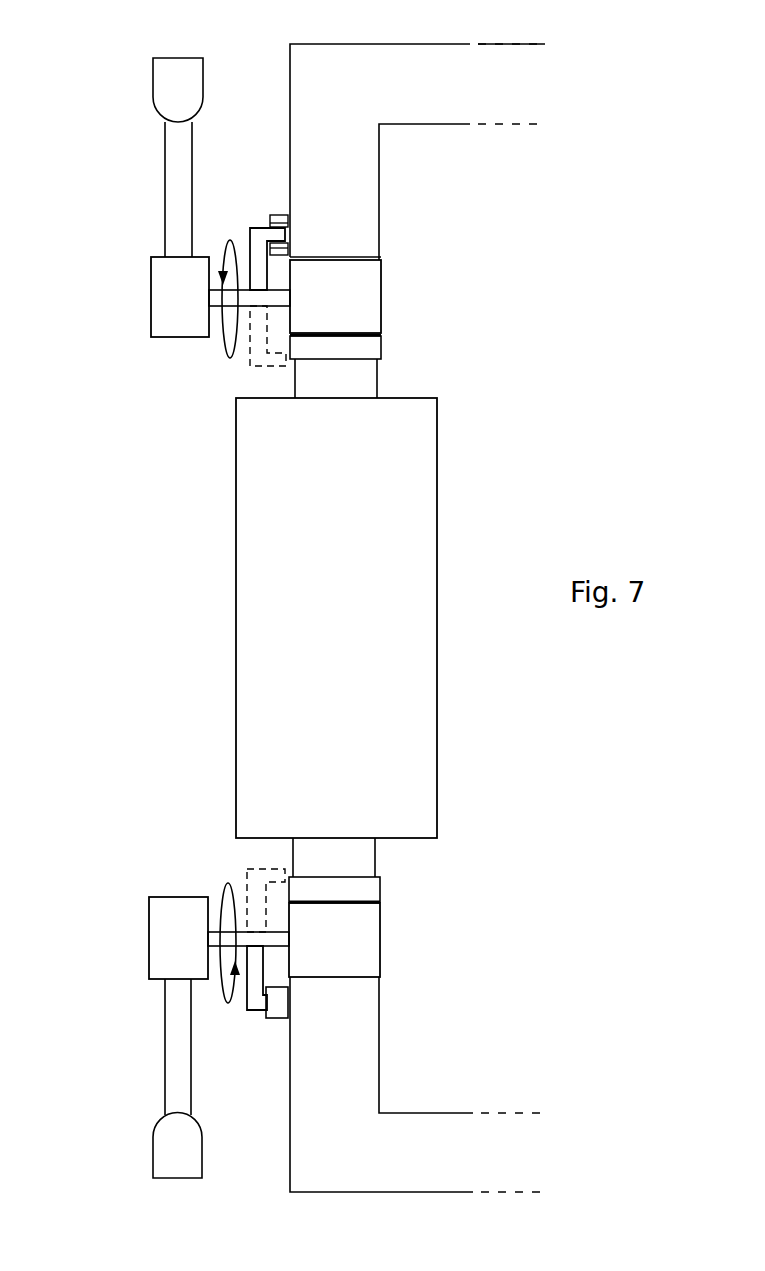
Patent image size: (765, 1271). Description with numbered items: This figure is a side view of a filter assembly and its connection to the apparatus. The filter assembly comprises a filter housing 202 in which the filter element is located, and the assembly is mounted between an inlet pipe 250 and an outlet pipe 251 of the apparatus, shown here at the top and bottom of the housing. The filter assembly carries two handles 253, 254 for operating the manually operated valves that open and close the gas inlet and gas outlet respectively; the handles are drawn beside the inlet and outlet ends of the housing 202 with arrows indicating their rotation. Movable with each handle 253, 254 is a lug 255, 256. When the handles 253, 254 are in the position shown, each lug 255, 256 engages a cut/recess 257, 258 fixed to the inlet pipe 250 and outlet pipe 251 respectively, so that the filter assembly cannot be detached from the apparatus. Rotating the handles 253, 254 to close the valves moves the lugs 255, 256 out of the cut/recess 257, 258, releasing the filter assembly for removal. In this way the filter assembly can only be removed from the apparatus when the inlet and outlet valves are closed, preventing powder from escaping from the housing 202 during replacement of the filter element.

The filter housing 202 is at (410, 461).
The inlet pipe 250 is at (362, 174).
The outlet pipe 251 is at (407, 1147).
The handle 253 is at (175, 296).
The handle 254 is at (183, 948).
The lug 255 is at (248, 237).
The lug 256 is at (249, 1011).
The cut/recess 257 is at (277, 213).
The cut/recess 258 is at (283, 1000).